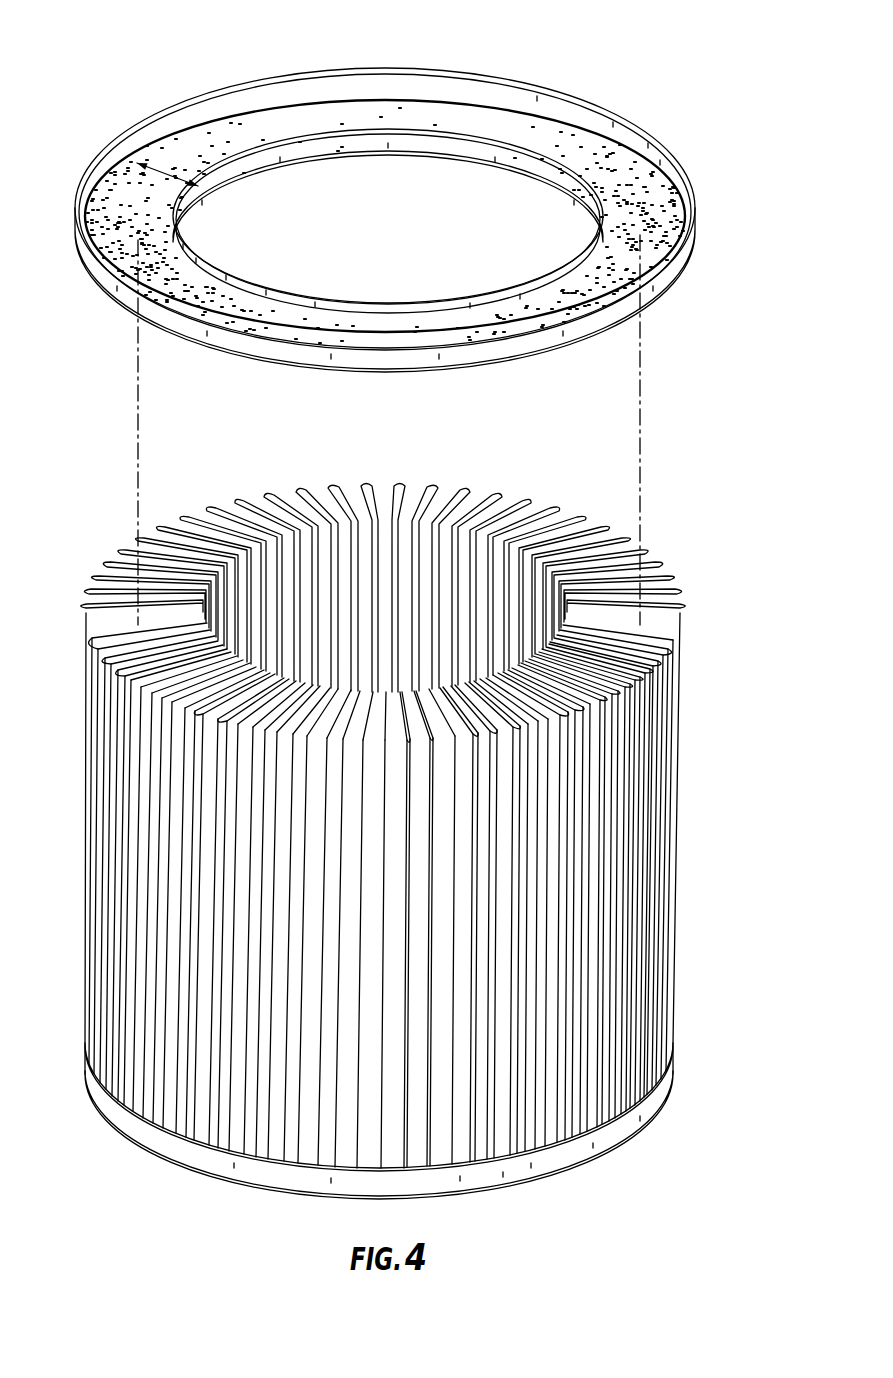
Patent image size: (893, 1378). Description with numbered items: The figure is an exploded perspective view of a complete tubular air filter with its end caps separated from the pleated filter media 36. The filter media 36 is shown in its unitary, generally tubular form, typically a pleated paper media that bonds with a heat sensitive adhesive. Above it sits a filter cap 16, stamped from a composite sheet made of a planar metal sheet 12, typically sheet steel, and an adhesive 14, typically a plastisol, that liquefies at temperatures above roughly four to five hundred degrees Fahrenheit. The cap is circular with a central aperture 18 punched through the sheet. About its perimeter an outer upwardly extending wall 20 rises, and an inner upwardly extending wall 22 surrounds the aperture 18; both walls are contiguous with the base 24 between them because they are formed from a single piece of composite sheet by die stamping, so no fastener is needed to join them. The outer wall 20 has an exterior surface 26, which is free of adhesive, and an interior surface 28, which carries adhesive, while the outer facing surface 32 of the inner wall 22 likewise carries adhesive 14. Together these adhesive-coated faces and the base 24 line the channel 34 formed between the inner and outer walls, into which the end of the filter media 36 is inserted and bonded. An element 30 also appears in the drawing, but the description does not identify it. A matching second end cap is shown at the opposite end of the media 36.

The planar metal sheet 12 is at (200, 112).
The adhesive 14 is at (153, 252).
The filter cap 16 is at (650, 90).
The aperture 18 is at (440, 290).
The outer upwardly extending wall 20 is at (512, 95).
The inner upwardly extending wall 22 is at (491, 157).
The base 24 is at (348, 118).
The exterior surface 26 is at (590, 114).
The interior surface 28 is at (528, 350).
The inner wall surface 30 is at (274, 312).
The outer facing surface 32 is at (244, 178).
The channel 34 is at (156, 166).
The filter media 36 is at (693, 582).